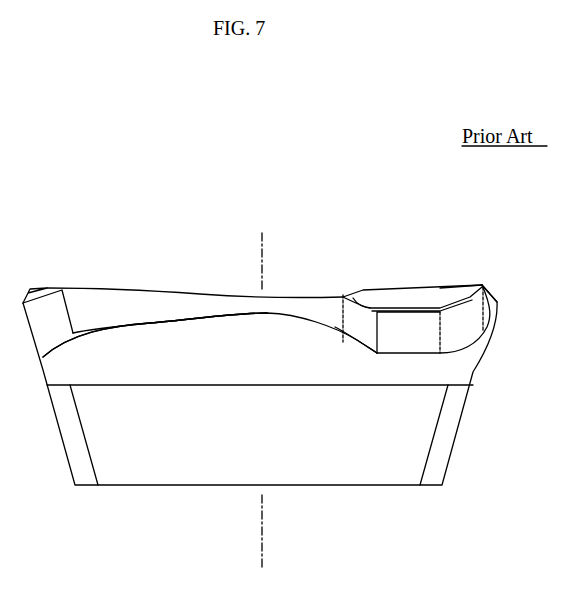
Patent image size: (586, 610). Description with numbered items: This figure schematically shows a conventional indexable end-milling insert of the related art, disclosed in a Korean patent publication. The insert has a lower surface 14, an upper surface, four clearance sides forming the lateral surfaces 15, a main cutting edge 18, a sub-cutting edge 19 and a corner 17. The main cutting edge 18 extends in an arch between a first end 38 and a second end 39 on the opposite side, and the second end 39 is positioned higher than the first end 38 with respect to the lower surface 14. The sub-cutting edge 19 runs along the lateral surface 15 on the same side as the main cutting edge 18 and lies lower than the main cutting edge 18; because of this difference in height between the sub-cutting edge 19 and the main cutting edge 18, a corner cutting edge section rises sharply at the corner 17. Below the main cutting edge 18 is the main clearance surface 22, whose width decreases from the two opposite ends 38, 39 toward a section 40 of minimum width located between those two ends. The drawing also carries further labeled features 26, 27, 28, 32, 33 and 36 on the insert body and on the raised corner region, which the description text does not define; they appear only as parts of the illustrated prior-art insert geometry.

The lower surface 14 is at (340, 487).
The lateral surface 15 is at (171, 339).
The corner 17 is at (460, 288).
The main cutting edge 18 is at (150, 290).
The sub-cutting edge 19 is at (403, 307).
The main clearance surface 22 is at (198, 303).
The front inclined face 26 is at (245, 364).
The side flank face 27 is at (213, 448).
The edge between top face and inclined face 28 is at (110, 332).
The front face of chip former 32 is at (397, 345).
The lower edge of chip former 33 is at (411, 356).
The side wall of chip former 36 is at (358, 317).
The first end 38 is at (376, 334).
The second end 39 is at (68, 313).
The section with a minimum width 40 is at (270, 303).